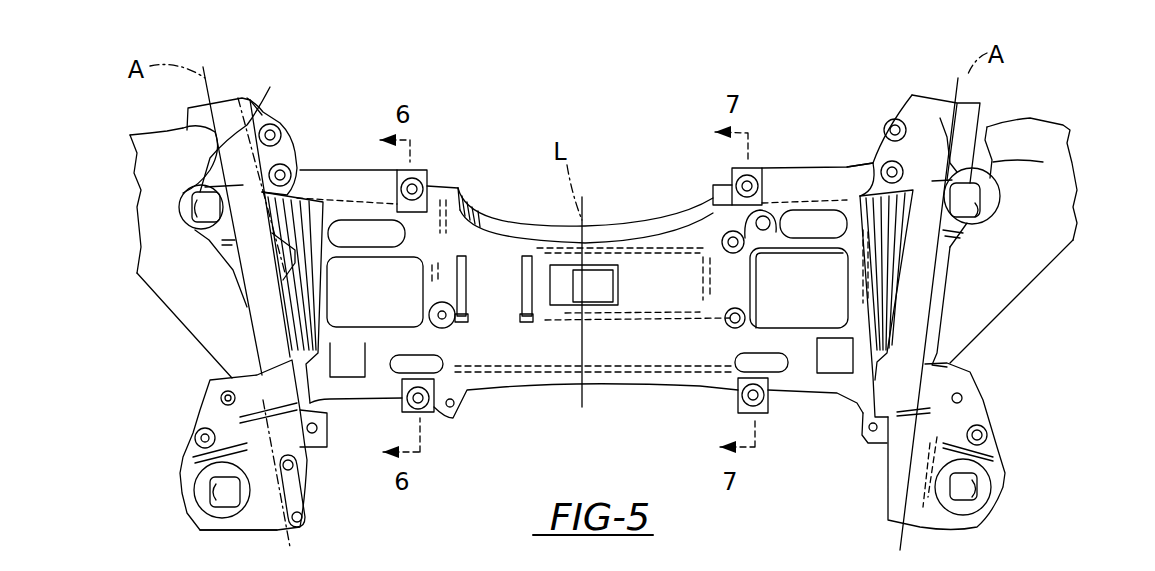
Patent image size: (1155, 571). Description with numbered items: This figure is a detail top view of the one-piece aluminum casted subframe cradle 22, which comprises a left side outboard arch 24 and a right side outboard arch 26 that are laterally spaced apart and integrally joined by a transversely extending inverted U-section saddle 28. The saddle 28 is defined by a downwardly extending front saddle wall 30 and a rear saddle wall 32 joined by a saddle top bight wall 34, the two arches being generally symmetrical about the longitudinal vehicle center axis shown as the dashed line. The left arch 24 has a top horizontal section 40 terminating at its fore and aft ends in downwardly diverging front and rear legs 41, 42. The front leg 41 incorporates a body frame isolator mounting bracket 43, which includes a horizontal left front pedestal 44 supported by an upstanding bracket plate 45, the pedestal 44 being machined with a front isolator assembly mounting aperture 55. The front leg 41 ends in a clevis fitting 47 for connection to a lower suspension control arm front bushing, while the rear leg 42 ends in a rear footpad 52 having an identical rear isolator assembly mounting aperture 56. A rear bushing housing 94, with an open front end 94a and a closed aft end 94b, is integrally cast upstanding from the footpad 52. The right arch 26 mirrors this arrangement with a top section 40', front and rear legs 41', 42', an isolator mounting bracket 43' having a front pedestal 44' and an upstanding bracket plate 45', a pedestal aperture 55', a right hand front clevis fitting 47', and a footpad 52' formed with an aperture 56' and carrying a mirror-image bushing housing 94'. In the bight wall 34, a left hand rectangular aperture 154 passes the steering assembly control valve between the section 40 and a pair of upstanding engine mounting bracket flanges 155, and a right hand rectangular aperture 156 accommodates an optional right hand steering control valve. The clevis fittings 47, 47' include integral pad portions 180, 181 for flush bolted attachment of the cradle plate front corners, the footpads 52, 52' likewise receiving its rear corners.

The subframe cradle 22 is at (780, 163).
The left side outboard arch 24 is at (236, 315).
The right side outboard arch 26 is at (325, 489).
The saddle 28 is at (627, 210).
The front saddle wall 30 is at (470, 227).
The rear saddle wall 32 is at (513, 372).
The saddle top bight wall 34 is at (513, 260).
The top horizontal section 40 is at (181, 253).
The front leg 41 is at (302, 267).
The rear leg 42 is at (209, 228).
The body frame isolator mounting bracket 43 is at (153, 214).
The left front pedestal 44 is at (148, 159).
The upstanding bracket plate 45 is at (246, 133).
The clevis fitting 47 is at (236, 167).
The rear footpad 52 is at (207, 445).
The front isolator assembly mounting aperture 55 is at (164, 264).
The rear isolator assembly mounting aperture 56 is at (181, 490).
The rear bushing housing 94 is at (321, 484).
The open front end 94a is at (263, 413).
The closed aft end 94b is at (278, 530).
The left hand rectangular aperture 154 is at (337, 260).
The engine mounting bracket flanges 155 is at (523, 323).
The right hand rectangular aperture 156 is at (785, 252).
The integral pad portion 180 is at (277, 117).
The integral pad portion 181 is at (908, 108).
The top section 40' is at (1003, 195).
The right front leg 41' is at (871, 259).
The rear leg 42' is at (993, 307).
The isolator mounting bracket 43' is at (1028, 191).
The front pedestal 44' is at (1053, 143).
The upstanding bracket plate 45' is at (1008, 132).
The right hand front clevis fitting 47' is at (994, 112).
The footpad 52' is at (1002, 446).
The aperture 55' is at (1038, 224).
The aperture 56' is at (1008, 487).
The bushing housing 94' is at (836, 447).